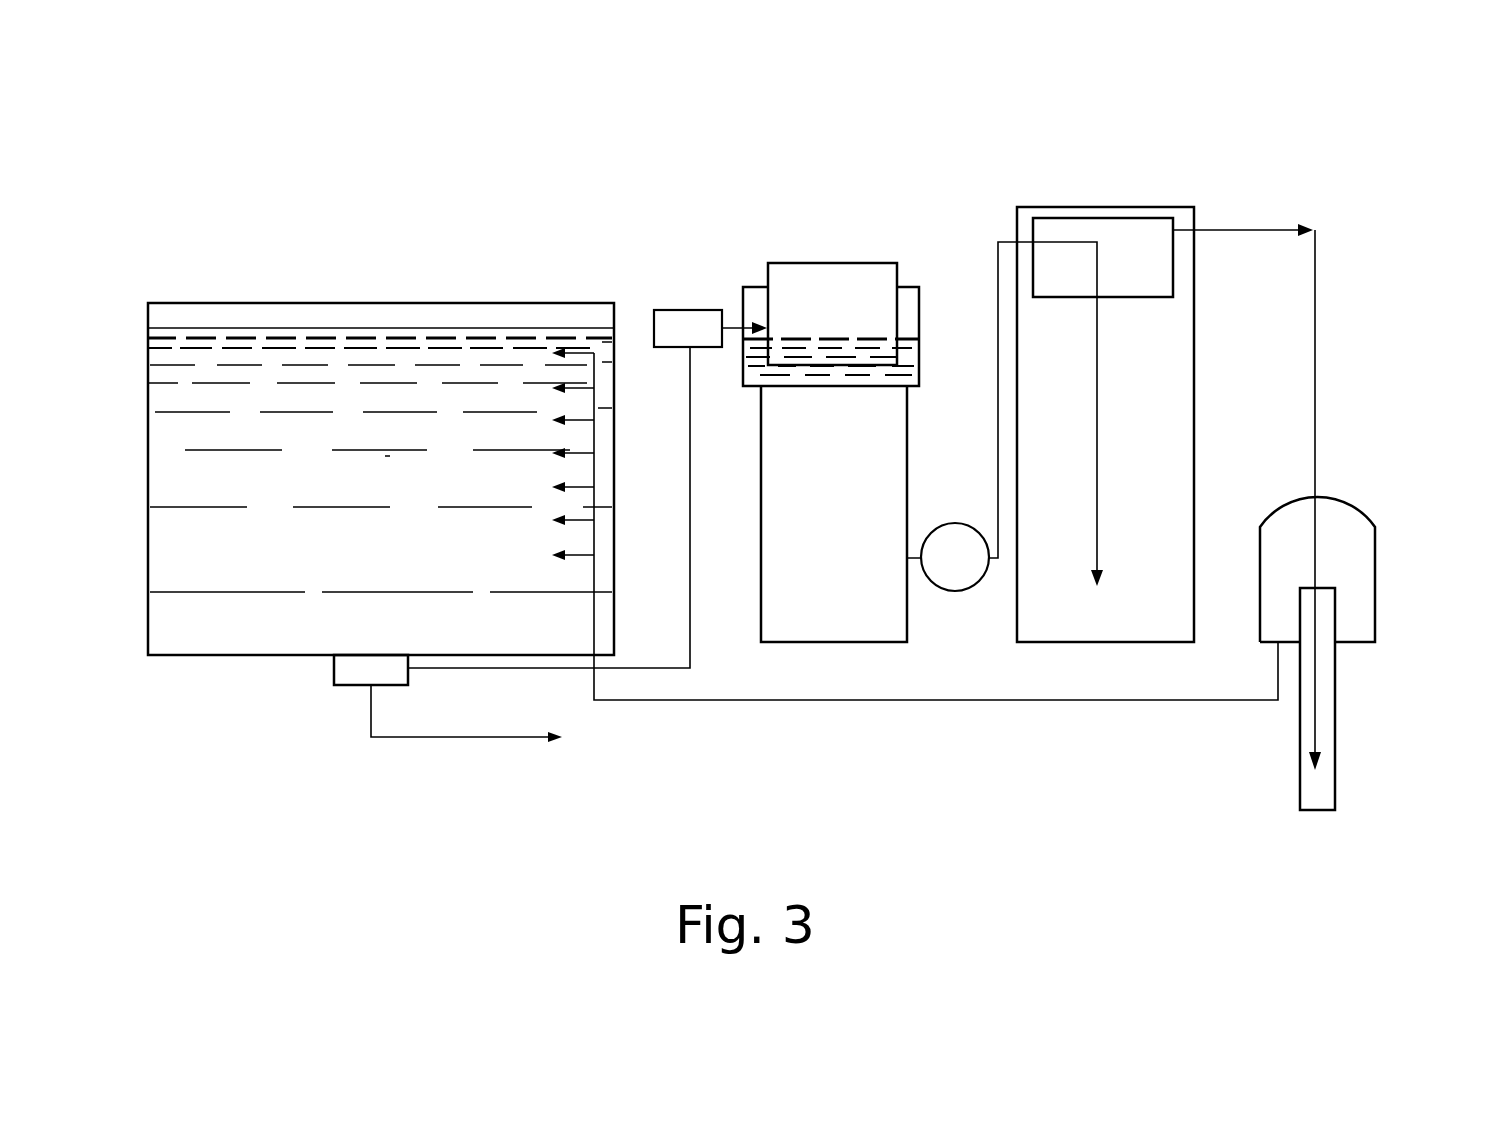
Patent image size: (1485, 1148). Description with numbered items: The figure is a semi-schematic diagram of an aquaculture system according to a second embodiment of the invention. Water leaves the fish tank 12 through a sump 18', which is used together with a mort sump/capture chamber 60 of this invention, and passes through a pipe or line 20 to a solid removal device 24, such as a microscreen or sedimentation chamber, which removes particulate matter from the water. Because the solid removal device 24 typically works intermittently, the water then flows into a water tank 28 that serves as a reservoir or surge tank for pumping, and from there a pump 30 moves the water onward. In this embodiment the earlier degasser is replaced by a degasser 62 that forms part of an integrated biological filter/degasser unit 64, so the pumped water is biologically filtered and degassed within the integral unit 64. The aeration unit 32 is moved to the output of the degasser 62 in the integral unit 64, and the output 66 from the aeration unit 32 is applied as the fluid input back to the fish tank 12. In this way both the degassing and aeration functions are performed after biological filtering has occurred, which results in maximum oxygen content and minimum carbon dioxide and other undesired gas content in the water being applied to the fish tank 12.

The tank 12 is at (218, 294).
The sump 18' is at (573, 704).
The pipe or line 20 is at (690, 638).
The solid removal device 24 is at (831, 324).
The water tank 28 is at (834, 514).
The pump 30 is at (955, 592).
The aeration unit 32 is at (1376, 560).
The mort sump/capture chamber 60 is at (710, 328).
The degasser 62 is at (1177, 494).
The integrated biological filter/degasser unit 64 is at (1222, 427).
The output 66 is at (1081, 700).